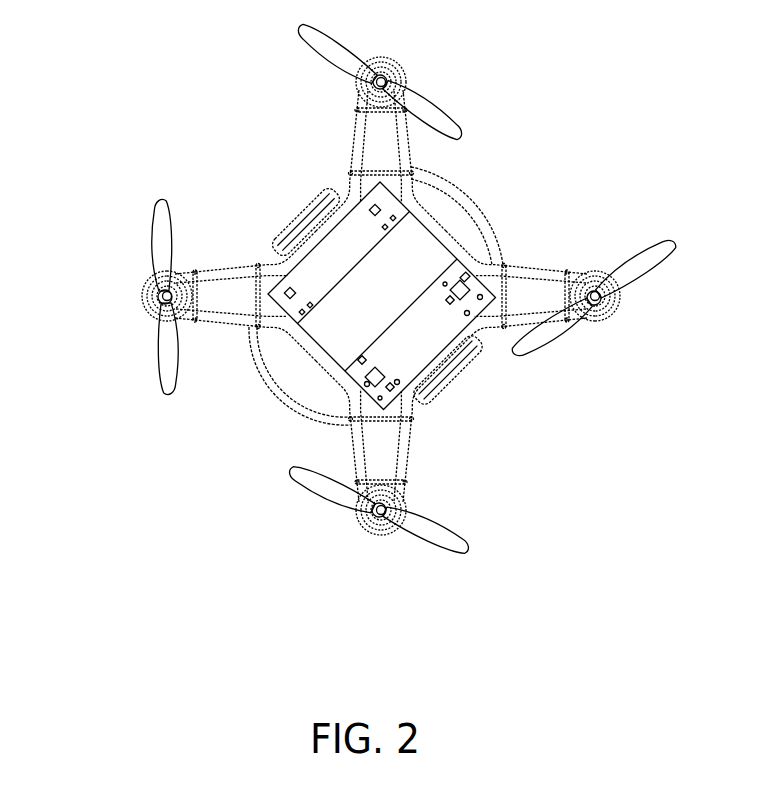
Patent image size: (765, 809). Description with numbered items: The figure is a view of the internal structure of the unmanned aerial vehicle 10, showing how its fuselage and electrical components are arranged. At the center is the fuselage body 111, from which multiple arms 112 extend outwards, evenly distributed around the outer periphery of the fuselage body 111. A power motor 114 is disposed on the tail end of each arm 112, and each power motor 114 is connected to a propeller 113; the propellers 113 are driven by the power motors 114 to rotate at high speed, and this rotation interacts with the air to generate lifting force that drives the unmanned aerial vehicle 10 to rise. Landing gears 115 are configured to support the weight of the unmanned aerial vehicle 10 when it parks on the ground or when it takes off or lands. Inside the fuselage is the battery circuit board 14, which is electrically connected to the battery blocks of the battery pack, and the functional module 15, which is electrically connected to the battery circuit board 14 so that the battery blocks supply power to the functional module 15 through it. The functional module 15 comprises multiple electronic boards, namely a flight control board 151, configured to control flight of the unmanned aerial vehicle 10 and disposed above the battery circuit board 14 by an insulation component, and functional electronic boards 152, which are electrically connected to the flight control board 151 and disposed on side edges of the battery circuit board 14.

The unmanned aerial vehicle 10 is at (106, 46).
The battery circuit board 14 is at (323, 244).
The functional module 15 is at (442, 245).
The flight control board 151 is at (400, 263).
The functional electronic boards 152 is at (500, 268).
The fuselage body 111 is at (462, 364).
The arms 112 is at (394, 440).
The propellers 113 is at (347, 493).
The power motors 114 is at (153, 306).
The landing gears 115 is at (273, 388).